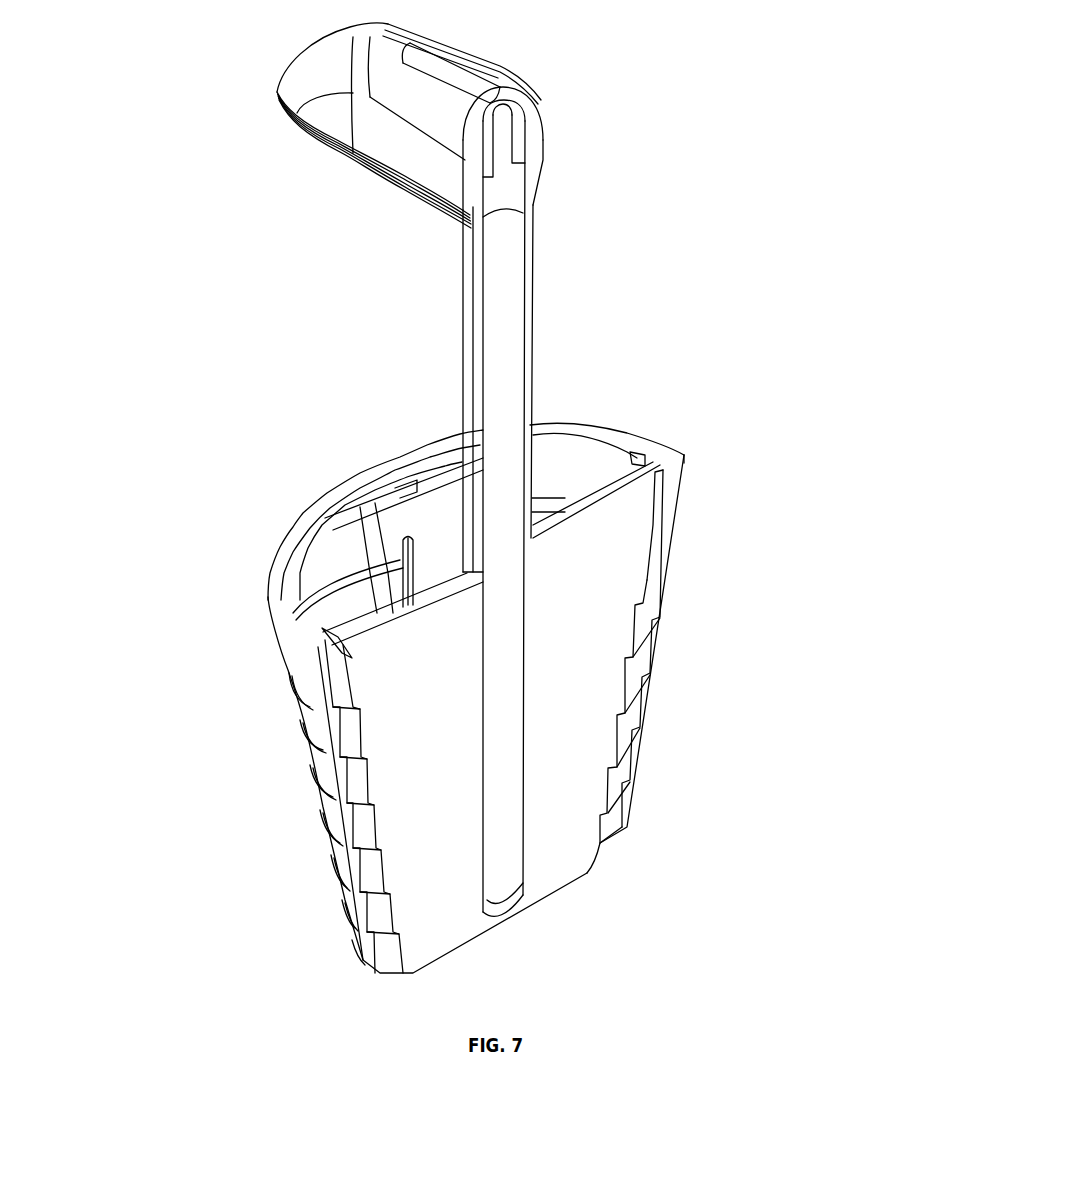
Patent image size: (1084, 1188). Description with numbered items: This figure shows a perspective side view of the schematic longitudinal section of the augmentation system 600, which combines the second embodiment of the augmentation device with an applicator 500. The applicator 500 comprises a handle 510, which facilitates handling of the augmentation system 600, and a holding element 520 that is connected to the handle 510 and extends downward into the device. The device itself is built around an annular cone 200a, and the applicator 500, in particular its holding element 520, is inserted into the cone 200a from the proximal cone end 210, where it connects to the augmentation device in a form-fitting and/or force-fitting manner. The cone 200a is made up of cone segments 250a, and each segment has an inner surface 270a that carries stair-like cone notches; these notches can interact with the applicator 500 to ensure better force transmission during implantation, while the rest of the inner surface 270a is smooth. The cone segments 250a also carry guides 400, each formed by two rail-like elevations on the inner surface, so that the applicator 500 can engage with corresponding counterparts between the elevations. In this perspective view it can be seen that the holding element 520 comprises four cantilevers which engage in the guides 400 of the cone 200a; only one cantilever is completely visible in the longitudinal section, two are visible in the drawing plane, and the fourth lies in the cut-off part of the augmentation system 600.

The augmentation system 600 is at (790, 361).
The handle 510 is at (413, 150).
The applicator 500 is at (583, 362).
The cone 200a is at (702, 674).
The proximal cone end 210 is at (203, 556).
The cone segments 250a is at (360, 942).
The inner surface of the cone segment 270a is at (312, 603).
The holding element 520 is at (598, 583).
The guides 400 is at (640, 458).